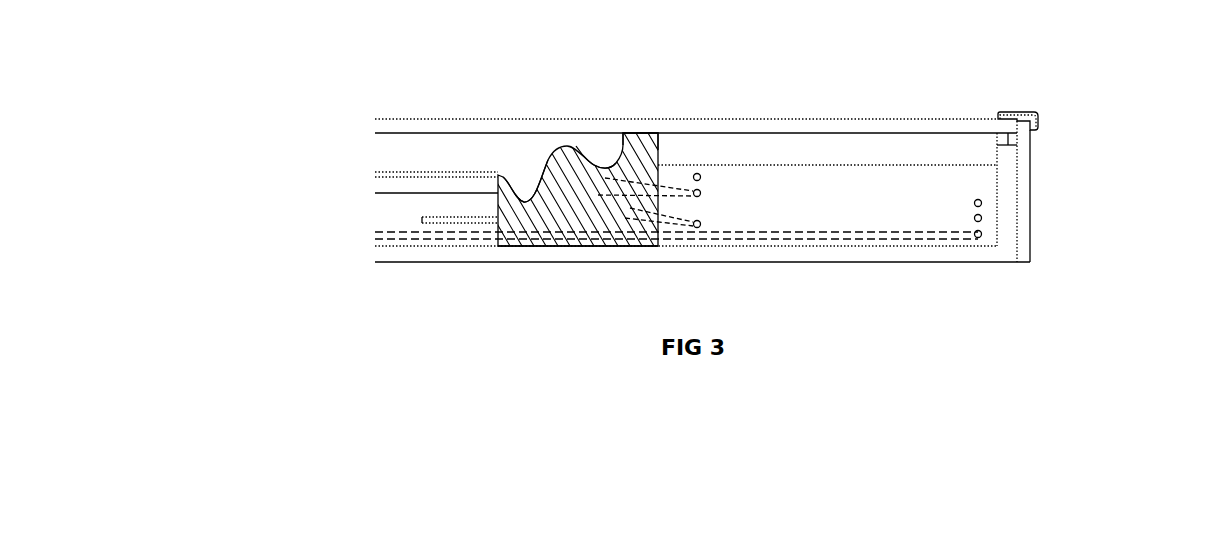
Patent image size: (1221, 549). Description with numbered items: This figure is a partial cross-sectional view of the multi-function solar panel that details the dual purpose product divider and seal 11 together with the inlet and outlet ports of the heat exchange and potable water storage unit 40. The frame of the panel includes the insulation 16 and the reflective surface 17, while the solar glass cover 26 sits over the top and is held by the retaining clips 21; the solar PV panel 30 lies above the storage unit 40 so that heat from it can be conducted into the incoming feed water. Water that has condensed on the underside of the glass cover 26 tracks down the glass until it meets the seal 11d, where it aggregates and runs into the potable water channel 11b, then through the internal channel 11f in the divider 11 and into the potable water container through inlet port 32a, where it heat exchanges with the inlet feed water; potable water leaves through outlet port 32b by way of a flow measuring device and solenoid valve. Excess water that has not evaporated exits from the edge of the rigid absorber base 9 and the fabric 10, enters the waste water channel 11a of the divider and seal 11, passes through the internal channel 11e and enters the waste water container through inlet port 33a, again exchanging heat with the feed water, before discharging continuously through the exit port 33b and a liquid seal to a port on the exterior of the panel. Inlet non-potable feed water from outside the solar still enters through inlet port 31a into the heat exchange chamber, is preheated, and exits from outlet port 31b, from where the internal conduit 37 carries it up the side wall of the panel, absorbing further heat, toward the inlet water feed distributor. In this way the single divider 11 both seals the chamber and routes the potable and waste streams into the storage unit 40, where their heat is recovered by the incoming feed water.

The rigid absorber base 9 is at (397, 176).
The fabric 10 is at (452, 169).
The dual purpose product divider and seal 11 is at (562, 148).
The waste water channel 11a is at (513, 171).
The potable water channel 11b is at (598, 147).
The seal 11d is at (643, 133).
The internal channel 11e is at (558, 226).
The internal channel 11f is at (652, 196).
The insulation 16 is at (458, 258).
The reflective surface 17 is at (410, 224).
The retaining clips 21 is at (1008, 106).
The solar glass cover 26 is at (703, 119).
The solar PV panel 30 is at (795, 140).
The inlet port 31a is at (717, 181).
The inlet port 32a is at (707, 198).
The inlet port 33a is at (700, 231).
The outlet port 31b is at (987, 229).
The outlet port 32b is at (987, 197).
The exit port 33b is at (987, 211).
The internal conduit 37 is at (375, 250).
The heat exchange and potable water storage unit 40 is at (895, 128).